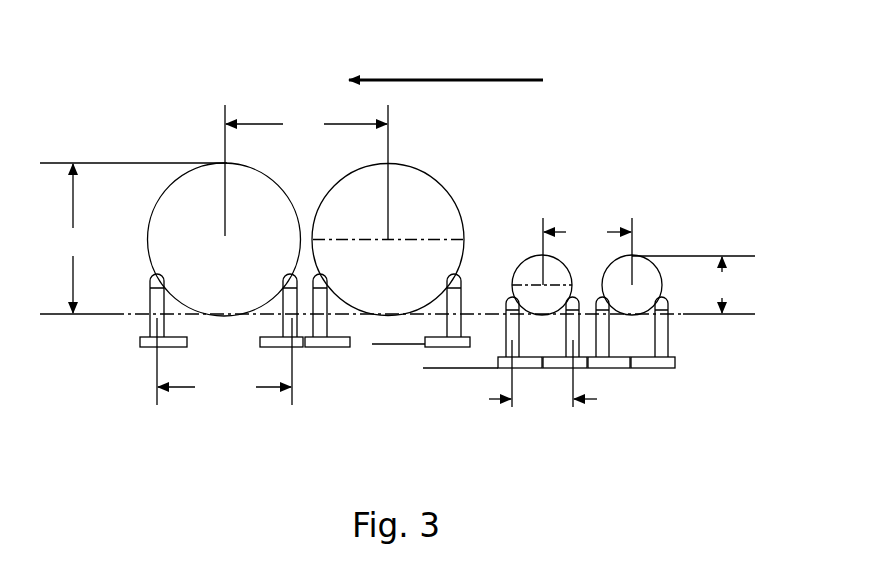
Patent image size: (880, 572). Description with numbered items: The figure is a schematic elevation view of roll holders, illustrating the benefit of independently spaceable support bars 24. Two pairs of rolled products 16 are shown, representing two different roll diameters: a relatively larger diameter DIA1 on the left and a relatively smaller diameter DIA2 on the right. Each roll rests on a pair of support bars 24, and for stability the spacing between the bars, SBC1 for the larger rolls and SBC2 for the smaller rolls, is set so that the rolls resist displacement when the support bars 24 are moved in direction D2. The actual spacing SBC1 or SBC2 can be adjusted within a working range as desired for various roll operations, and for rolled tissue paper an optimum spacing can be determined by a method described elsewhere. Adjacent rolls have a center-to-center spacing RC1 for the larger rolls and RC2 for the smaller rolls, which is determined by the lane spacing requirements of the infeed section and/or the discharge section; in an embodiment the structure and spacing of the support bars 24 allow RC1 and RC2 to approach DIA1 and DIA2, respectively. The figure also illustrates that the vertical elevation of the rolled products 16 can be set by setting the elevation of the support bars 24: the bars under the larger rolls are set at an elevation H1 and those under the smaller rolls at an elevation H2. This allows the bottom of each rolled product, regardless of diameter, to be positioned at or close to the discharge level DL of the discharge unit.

The rolled products 16 is at (530, 255).
The support bars 24 is at (512, 317).
The direction of support bar movement D2 is at (493, 77).
The center-to-center spacing of larger rolls RC1 is at (306, 124).
The center-to-center spacing of smaller rolls RC2 is at (587, 232).
The larger roll diameter DIA1 is at (69, 238).
The smaller roll diameter DIA2 is at (724, 285).
The discharge level DL is at (96, 316).
The support bar spacing for larger rolls SBC1 is at (224, 361).
The support bar spacing for smaller rolls SBC2 is at (563, 373).
The support bar elevation for larger rolls H1 is at (387, 347).
The support bar elevation for smaller rolls H2 is at (436, 370).